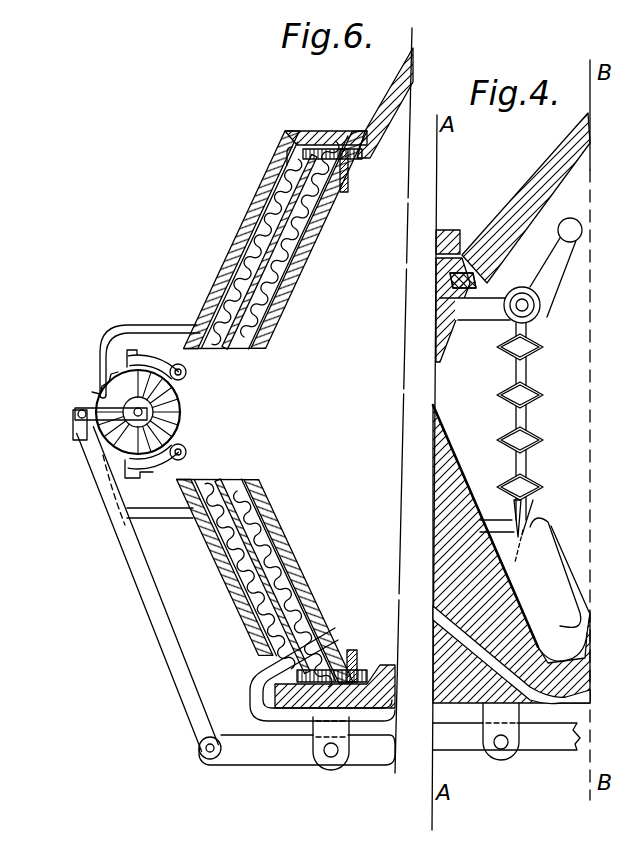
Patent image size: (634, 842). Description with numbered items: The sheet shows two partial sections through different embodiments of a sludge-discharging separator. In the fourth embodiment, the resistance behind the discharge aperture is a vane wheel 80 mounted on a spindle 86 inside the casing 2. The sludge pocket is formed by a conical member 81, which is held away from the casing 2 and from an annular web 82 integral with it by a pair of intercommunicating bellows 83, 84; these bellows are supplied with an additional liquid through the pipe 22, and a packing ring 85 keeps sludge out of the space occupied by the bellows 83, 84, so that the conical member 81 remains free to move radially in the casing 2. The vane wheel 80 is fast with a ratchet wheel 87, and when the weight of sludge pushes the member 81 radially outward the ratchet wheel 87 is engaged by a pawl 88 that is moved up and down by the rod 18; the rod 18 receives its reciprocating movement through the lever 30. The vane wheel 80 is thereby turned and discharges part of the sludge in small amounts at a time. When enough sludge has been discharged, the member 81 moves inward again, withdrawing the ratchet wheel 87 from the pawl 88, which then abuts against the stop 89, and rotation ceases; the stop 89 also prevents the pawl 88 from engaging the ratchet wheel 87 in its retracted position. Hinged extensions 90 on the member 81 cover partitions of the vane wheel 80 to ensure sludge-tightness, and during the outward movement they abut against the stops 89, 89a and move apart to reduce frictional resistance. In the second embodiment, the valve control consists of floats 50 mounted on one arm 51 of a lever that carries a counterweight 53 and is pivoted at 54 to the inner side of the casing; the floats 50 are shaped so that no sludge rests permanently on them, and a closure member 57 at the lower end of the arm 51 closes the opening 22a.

In FIG. 6, the casing 2 is at (258, 180).
In FIG. 6, the rod 18 is at (143, 582).
In FIG. 6, the pipe 22 is at (258, 696).
In FIG. 4, the pipe 22 is at (560, 568).
In FIG. 4, the opening 22a is at (531, 560).
In FIG. 6, the lever 30 is at (258, 753).
In FIG. 4, the floats 50 is at (530, 388).
In FIG. 4, the arm of lever 51 is at (517, 416).
In FIG. 4, the counterweight 53 is at (560, 232).
In FIG. 4, the pivot 54 is at (510, 297).
In FIG. 4, the closure member 57 is at (530, 514).
In FIG. 6, the vane wheel 80 is at (181, 395).
In FIG. 6, the conical member 81 is at (300, 275).
In FIG. 6, the annular web 82 is at (290, 241).
In FIG. 6, the bellows 83 is at (313, 201).
In FIG. 6, the bellows 84 is at (260, 222).
In FIG. 6, the packing ring 85 is at (345, 149).
In FIG. 6, the spindle 86 is at (148, 414).
In FIG. 6, the ratchet wheel 87 is at (85, 450).
In FIG. 6, the pawl 88 is at (93, 392).
In FIG. 6, the stop 89 is at (150, 325).
In FIG. 6, the stop 89a is at (160, 518).
In FIG. 6, the hinged extensions 90 is at (143, 473).